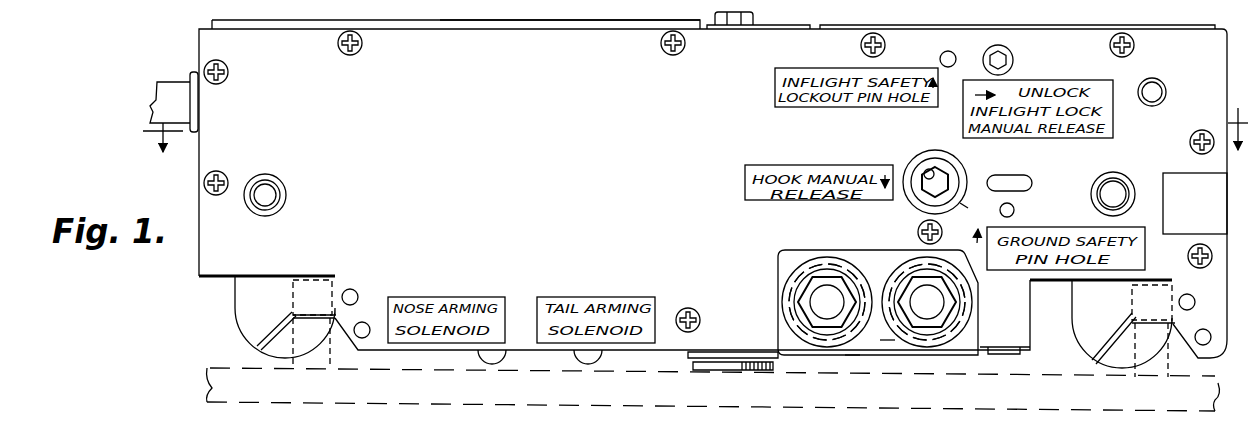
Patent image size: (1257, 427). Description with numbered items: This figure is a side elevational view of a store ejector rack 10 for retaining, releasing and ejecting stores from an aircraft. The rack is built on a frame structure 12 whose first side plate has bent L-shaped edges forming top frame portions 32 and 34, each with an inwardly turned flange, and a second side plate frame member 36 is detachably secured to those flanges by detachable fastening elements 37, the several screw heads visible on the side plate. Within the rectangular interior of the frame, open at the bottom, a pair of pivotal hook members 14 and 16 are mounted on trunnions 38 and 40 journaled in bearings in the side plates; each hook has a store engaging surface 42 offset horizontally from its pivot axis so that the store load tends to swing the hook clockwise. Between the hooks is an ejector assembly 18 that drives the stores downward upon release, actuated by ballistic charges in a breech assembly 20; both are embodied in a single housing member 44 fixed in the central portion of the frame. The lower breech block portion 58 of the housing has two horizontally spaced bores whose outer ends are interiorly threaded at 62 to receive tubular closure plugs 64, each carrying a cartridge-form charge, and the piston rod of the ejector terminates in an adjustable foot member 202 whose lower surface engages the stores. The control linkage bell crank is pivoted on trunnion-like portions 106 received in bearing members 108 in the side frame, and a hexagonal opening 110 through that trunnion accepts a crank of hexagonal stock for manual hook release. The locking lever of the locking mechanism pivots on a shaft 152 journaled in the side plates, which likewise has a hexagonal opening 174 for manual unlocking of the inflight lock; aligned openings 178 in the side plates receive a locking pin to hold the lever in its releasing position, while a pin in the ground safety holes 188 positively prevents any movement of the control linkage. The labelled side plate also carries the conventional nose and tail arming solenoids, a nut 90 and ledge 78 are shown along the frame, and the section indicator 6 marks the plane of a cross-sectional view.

The section line 6- 6 is at (695, 145).
The store ejector rack 10 is at (185, 47).
The frame structure 12 is at (522, 19).
The hook member 14 is at (1092, 362).
The hook member 16 is at (223, 344).
The ejector assembly 18 is at (733, 376).
The breech assembly 20 is at (853, 358).
The top frame portion 32 is at (1020, 26).
The top frame portion 34 is at (450, 20).
The second side plate frame member 36 is at (686, 223).
The detachable fastening elements 37 is at (342, 52).
The trunnions 38 is at (1133, 185).
The trunnions 40 is at (277, 196).
The store engaging surface 42 is at (312, 312).
The housing member 44 is at (887, 338).
The breech block portion 58 is at (900, 250).
The interiorly threaded outer extremity 62 is at (925, 263).
The tubular closure plug 64 is at (822, 303).
The ledge 78 is at (1020, 354).
The nut 90 is at (755, 15).
The trunnion-like portion 106 is at (950, 168).
The bearing member 108 is at (970, 215).
The hexagonal opening 110 is at (926, 177).
The shaft 152 is at (1013, 64).
The hexagonal opening 174 is at (1013, 57).
The aligned openings 178 is at (940, 58).
The ground safety holes 188 is at (1014, 210).
The foot member 202 is at (713, 397).